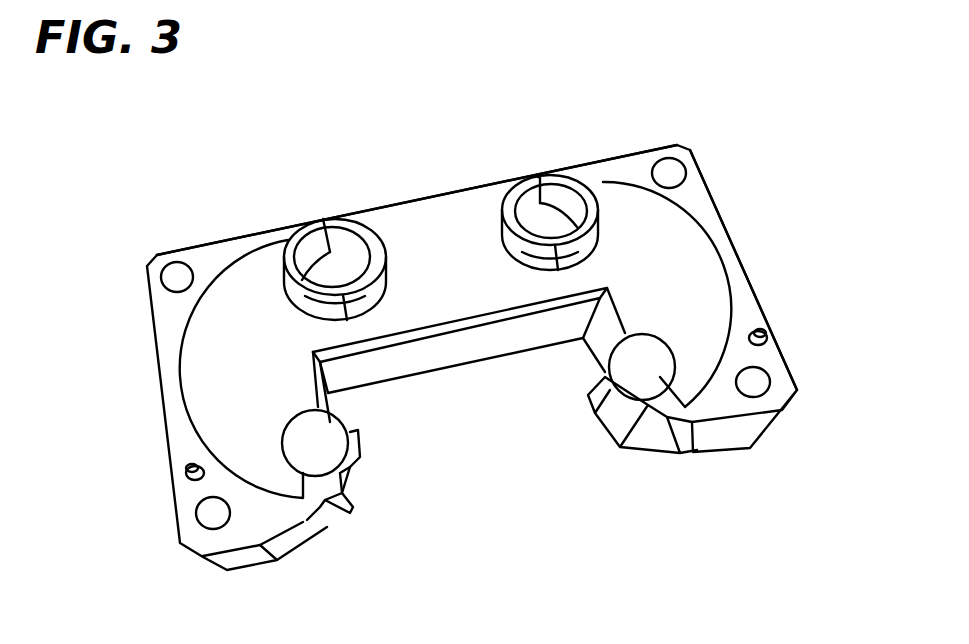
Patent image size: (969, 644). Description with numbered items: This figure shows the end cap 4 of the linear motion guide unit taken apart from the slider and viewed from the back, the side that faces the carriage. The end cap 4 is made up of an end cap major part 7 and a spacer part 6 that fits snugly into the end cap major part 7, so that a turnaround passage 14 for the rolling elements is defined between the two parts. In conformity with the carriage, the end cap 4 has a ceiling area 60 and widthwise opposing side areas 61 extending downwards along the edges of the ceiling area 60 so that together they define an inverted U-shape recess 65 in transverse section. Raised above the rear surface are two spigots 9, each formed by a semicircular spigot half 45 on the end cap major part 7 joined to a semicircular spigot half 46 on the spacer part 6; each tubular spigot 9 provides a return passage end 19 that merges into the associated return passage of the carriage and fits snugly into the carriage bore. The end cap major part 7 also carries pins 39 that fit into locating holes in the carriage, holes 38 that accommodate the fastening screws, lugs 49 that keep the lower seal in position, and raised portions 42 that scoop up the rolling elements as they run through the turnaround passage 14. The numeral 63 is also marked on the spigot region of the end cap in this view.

The end cap 4 is at (713, 183).
The spacer part 6 is at (702, 285).
The end cap major part 7 is at (715, 235).
The spigot 9 is at (357, 228).
The turnaround passage 14 is at (323, 450).
The return passage end 19 is at (340, 247).
The holes 38 is at (177, 272).
The pins 39 is at (765, 332).
The raised portions 42 is at (368, 458).
The spigot half 45 is at (367, 292).
The spigot half 46 is at (290, 248).
The lugs 49 is at (327, 528).
The ceiling area 60 is at (258, 240).
The side areas 61 is at (173, 415).
The shoulder 63 is at (368, 245).
The inverted U-shape recess 65 is at (452, 358).